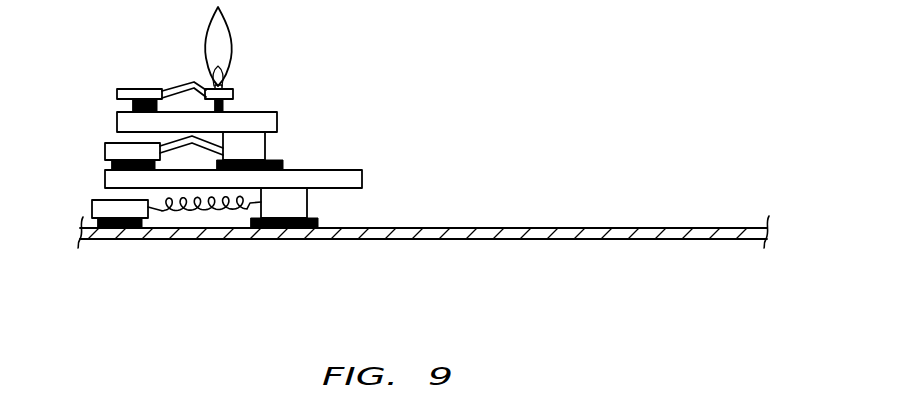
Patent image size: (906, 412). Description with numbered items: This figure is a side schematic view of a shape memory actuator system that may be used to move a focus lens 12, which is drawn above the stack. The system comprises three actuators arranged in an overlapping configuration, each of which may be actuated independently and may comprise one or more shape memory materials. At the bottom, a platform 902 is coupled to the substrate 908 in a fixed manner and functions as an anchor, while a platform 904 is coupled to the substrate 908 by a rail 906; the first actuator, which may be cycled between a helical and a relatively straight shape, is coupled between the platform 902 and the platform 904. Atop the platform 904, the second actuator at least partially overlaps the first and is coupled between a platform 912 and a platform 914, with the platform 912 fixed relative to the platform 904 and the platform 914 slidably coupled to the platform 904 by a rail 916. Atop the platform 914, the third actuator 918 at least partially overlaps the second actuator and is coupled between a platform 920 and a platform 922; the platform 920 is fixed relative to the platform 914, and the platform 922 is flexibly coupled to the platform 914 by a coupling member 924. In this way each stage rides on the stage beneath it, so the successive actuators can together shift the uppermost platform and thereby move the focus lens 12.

The focus lens 12 is at (228, 32).
The platform 902 is at (92, 207).
The platform 904 is at (363, 180).
The rail 906 is at (320, 219).
The substrate 908 is at (467, 240).
The platform 912 is at (105, 152).
The platform 914 is at (278, 122).
The rail 916 is at (284, 167).
The third actuator 918 is at (173, 88).
The platform 920 is at (140, 89).
The platform 922 is at (235, 92).
The coupling member 924 is at (224, 106).